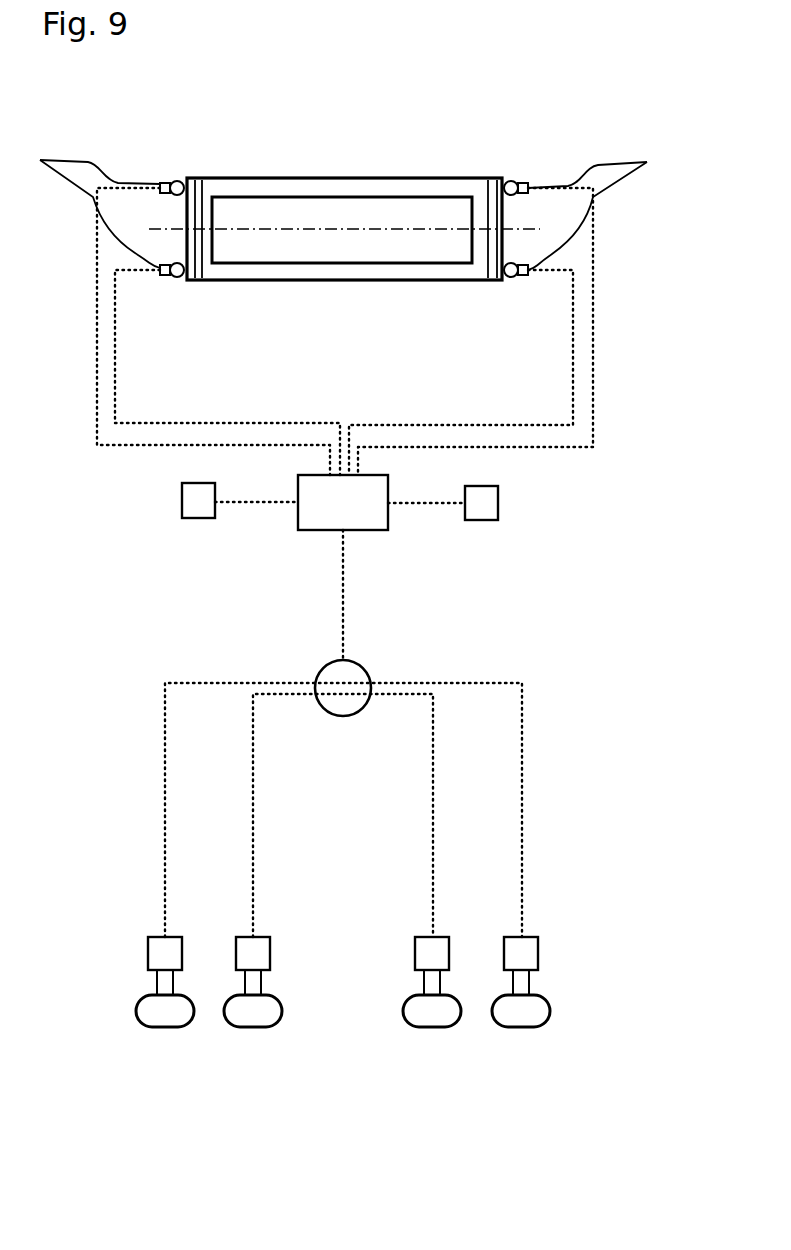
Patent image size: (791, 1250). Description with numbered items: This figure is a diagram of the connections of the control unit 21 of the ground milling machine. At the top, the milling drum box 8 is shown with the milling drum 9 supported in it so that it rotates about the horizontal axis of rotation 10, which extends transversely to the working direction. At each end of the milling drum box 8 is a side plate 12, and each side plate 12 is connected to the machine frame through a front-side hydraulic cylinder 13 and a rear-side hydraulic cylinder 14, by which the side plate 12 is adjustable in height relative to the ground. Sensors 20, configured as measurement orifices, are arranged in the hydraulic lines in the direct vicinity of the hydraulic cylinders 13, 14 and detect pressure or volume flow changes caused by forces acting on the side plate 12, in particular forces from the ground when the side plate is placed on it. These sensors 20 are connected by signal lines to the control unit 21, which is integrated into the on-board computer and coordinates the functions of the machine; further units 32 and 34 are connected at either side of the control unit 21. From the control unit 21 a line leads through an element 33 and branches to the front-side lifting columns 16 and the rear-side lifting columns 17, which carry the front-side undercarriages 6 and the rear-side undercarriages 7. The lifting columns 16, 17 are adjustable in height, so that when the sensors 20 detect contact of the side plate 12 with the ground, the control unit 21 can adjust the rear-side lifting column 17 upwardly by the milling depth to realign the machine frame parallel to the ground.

The front-side undercarriage 6 is at (158, 1012).
The rear-side undercarriage 7 is at (425, 1012).
The milling drum box 8 is at (337, 168).
The milling drum 9 is at (427, 220).
The horizontal axis of rotation 10 is at (378, 229).
The side plate 12 is at (196, 196).
The front-side hydraulic cylinder 13 is at (171, 183).
The rear-side hydraulic cylinder 14 is at (177, 277).
The front-side lifting column 16 is at (168, 950).
The rear-side lifting column 17 is at (435, 950).
The sensor 20 is at (343, 204).
The control unit 21 is at (313, 500).
The memory unit 32 is at (480, 507).
The brake distribution valve 33 is at (353, 683).
The input unit 34 is at (197, 505).